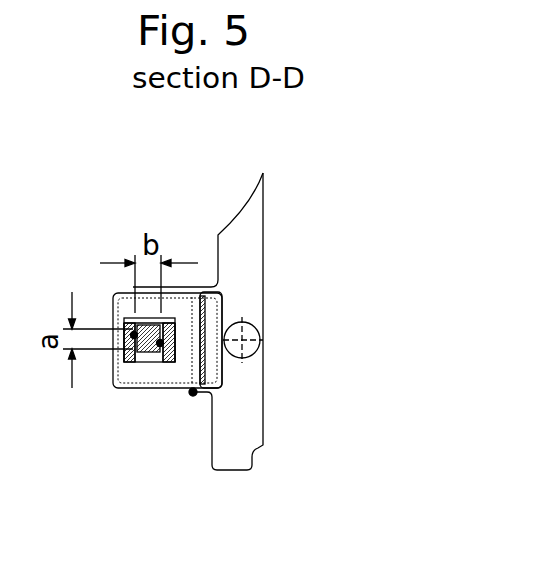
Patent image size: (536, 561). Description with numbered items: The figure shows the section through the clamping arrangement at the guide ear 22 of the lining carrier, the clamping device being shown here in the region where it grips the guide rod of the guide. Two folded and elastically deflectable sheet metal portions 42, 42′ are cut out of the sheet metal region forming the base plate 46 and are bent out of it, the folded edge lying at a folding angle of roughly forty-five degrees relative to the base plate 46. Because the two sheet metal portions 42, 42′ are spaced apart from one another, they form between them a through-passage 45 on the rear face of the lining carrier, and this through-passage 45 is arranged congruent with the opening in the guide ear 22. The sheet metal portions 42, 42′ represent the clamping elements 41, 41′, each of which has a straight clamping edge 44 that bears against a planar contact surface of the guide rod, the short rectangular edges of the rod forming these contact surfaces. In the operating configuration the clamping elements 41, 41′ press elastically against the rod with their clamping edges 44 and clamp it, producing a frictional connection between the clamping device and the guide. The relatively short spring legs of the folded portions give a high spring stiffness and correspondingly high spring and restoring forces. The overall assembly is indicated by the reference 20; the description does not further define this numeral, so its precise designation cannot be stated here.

The housing 20 is at (316, 177).
The guide ear 22 is at (190, 397).
The clamping element 41 is at (122, 298).
The folded sheet metal portion 42 is at (129, 342).
The clamping element 41′ is at (168, 296).
The folded sheet metal portion 42′ is at (169, 342).
The straight clamping edge 44 is at (134, 336).
The through-passage 45 is at (141, 382).
The base plate 46 is at (167, 385).